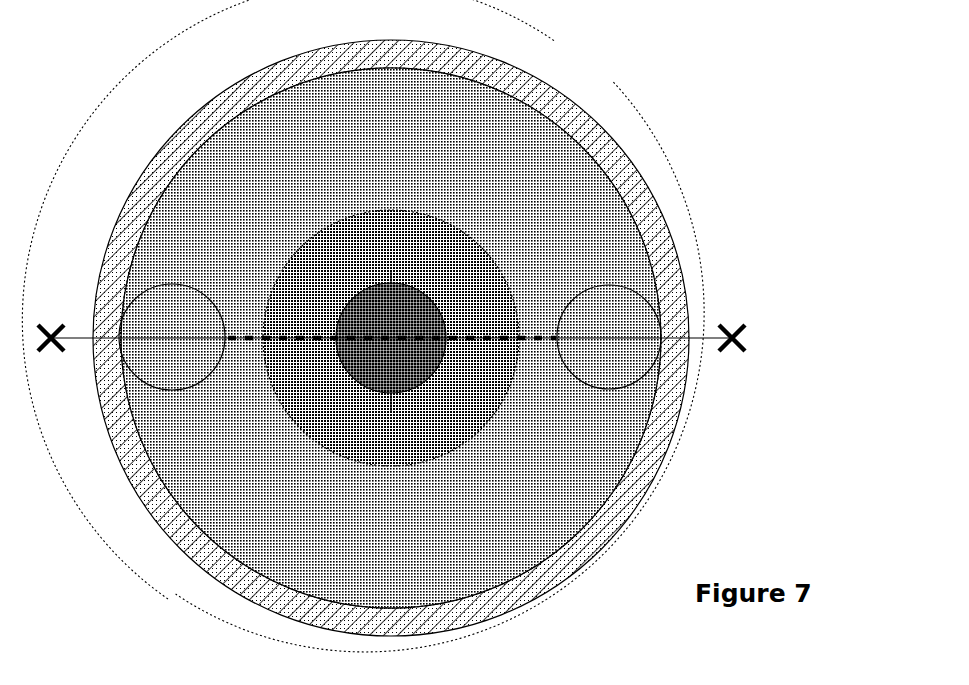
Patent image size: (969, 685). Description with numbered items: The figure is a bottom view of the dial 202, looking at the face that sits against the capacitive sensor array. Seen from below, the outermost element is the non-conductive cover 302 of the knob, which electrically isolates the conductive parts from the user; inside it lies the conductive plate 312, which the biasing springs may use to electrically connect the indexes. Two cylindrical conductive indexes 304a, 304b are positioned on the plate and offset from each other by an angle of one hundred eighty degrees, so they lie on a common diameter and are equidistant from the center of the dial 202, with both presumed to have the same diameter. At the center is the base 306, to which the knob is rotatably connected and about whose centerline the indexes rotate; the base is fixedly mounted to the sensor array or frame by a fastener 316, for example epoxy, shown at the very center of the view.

The dial 202 is at (73, 71).
The non-conductive cover 302 is at (285, 588).
The conductive plate 312 is at (338, 152).
The index 304a is at (187, 390).
The index 304b is at (608, 283).
The base 306 is at (477, 417).
The fastener 316 is at (417, 289).